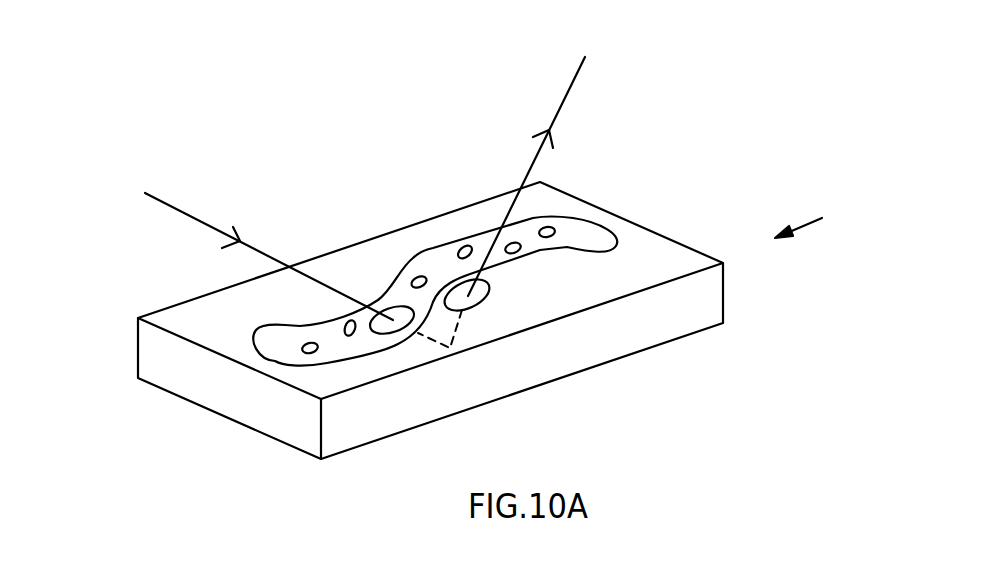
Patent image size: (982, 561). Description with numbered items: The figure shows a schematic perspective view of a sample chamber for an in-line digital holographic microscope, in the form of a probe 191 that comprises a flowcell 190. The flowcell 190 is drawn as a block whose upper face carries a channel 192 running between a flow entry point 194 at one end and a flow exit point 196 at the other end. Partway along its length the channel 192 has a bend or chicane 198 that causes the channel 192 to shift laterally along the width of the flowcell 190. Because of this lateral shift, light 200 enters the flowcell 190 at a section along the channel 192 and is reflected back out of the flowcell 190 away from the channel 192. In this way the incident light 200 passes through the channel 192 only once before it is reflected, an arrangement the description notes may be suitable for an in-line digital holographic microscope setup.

The flowcell 190 is at (652, 257).
The probe 191 is at (824, 218).
The channel 192 is at (445, 258).
The flow entry point 194 is at (272, 342).
The flow exit point 196 is at (583, 237).
The bend or chicane 198 is at (407, 295).
The light 200 is at (183, 212).